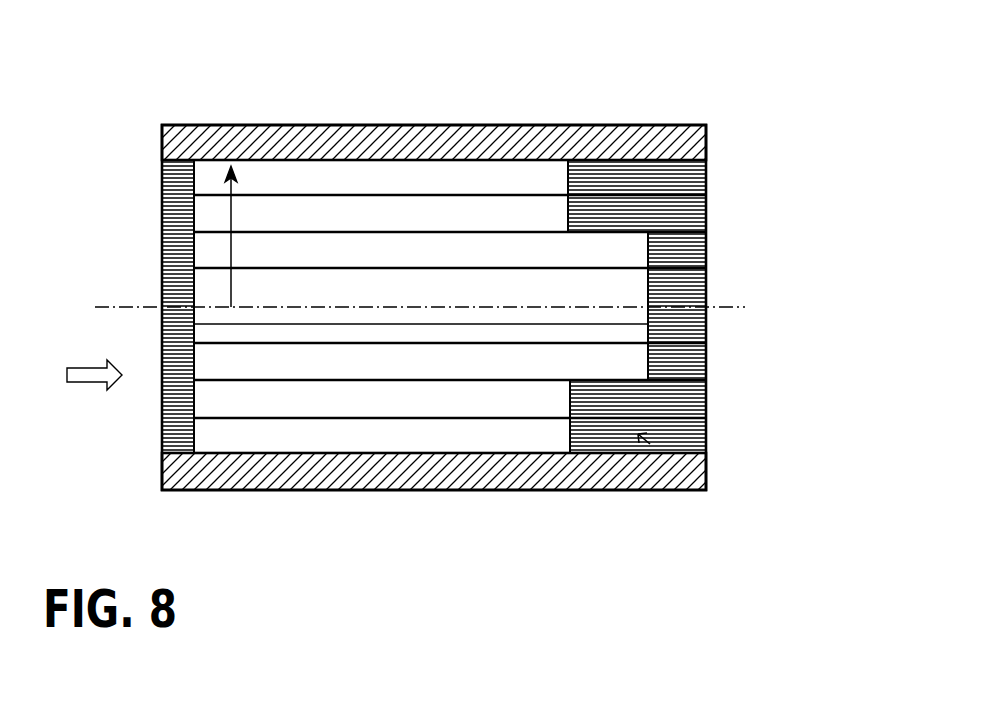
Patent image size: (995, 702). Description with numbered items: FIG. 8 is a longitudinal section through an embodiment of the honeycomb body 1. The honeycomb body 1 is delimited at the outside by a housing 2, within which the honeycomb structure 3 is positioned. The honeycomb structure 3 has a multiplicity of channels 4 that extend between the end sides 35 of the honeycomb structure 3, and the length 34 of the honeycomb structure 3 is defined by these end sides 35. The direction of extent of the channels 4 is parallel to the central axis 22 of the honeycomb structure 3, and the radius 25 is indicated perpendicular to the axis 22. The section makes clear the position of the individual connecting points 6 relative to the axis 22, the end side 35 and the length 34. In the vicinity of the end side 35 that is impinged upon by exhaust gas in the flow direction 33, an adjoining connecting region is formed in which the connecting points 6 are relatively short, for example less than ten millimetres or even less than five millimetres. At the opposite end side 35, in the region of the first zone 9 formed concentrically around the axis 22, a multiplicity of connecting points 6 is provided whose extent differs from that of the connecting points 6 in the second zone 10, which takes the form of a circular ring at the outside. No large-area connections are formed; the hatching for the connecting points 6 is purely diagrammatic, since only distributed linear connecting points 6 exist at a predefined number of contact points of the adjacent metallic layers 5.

The honeycomb body 1 is at (665, 488).
The housing 2 is at (360, 128).
The honeycomb structure 3 is at (262, 190).
The channels 4 is at (553, 433).
The metallic layers 5 is at (500, 160).
The connecting points 6 is at (706, 238).
The first zone 9 is at (727, 233).
The second zone 10 is at (727, 158).
The central axis 22 is at (105, 305).
The radius 25 is at (228, 213).
The flow direction 33 is at (92, 375).
The length 34 is at (335, 324).
The end sides 35 is at (162, 216).